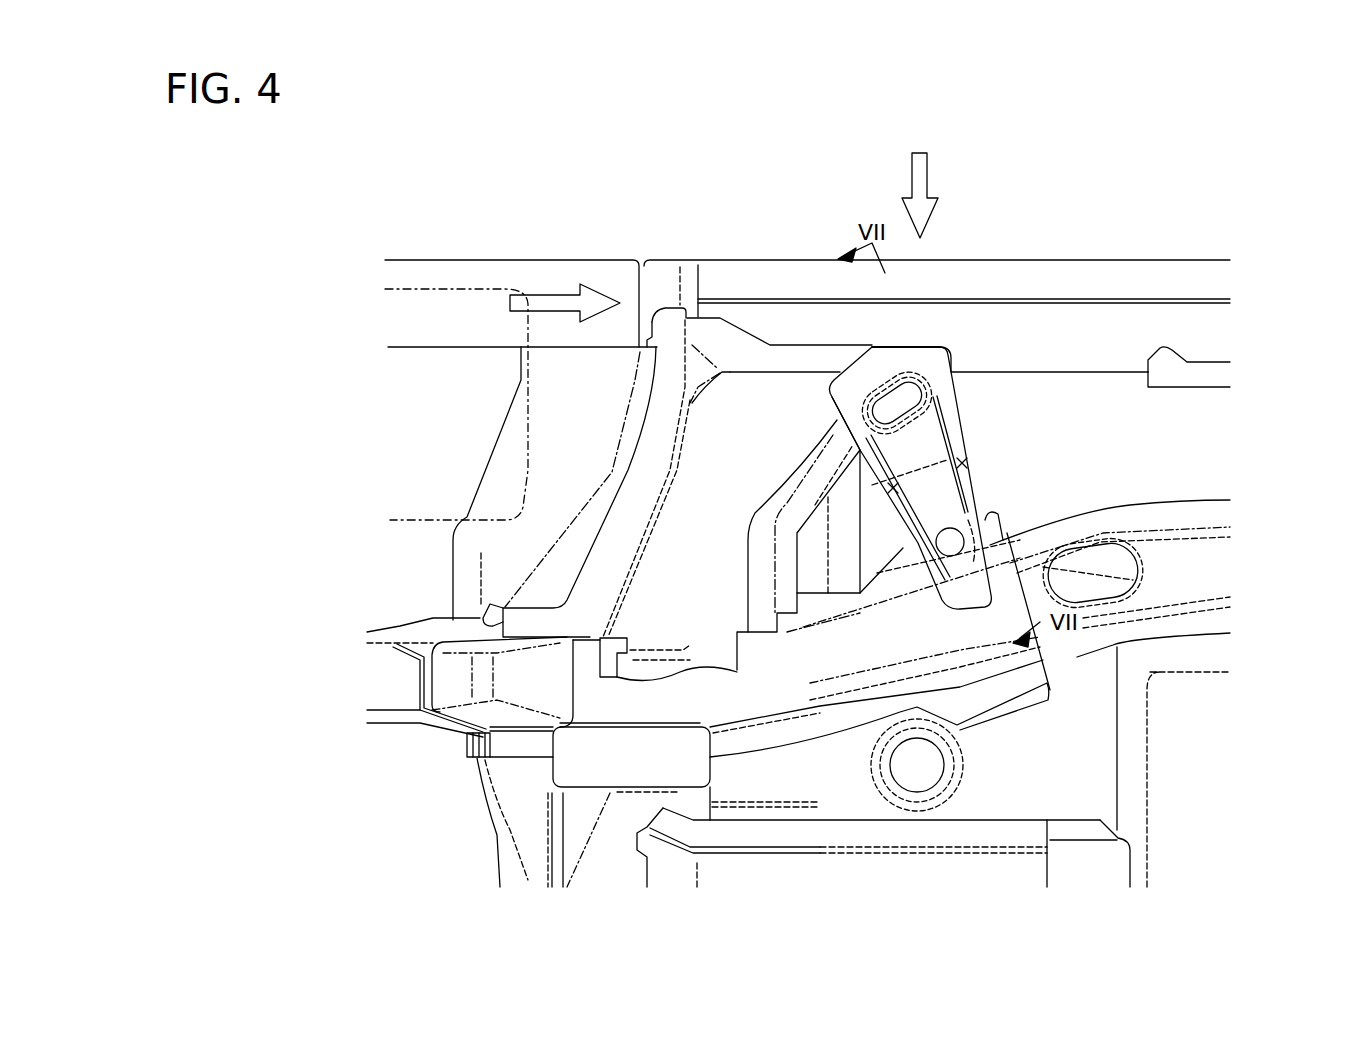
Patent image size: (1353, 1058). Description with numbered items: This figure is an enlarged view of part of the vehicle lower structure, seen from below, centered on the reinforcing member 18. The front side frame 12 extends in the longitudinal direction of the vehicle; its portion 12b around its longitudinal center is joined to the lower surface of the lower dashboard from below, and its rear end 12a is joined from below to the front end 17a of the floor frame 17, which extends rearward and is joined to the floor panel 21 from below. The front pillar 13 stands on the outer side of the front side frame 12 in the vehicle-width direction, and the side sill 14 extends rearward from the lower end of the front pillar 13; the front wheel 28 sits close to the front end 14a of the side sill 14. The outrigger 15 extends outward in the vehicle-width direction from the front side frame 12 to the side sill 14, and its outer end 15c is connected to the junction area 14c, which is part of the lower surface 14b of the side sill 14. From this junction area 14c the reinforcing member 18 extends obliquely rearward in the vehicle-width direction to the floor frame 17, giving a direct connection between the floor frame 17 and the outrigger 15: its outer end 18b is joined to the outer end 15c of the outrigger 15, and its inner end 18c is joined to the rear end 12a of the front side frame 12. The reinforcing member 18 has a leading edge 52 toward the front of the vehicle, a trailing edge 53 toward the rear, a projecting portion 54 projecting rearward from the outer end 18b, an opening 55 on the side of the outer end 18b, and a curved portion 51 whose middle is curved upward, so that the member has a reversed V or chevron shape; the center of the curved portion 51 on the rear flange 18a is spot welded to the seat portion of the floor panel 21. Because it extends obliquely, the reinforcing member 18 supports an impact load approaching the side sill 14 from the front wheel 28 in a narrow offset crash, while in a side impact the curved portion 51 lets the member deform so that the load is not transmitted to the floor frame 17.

The front side frame 12 is at (392, 698).
The rear end of the front side frame 12a is at (957, 622).
The portion of the front side frame 12b is at (608, 708).
The front pillar 13 is at (664, 272).
The side sill 14 is at (1092, 259).
The front end of the side sill 14a is at (722, 272).
The lower surface of the side sill 14b is at (1015, 343).
The junction area of the side sill 14c is at (888, 340).
The outrigger 15 is at (687, 495).
The outer end of the outrigger 15c is at (835, 358).
The floor frame 17 is at (1177, 514).
The front end of the floor frame 17a is at (1137, 580).
The reinforcing member 18 is at (977, 483).
The rear flange of the reinforcing member 18a is at (952, 420).
The outer end of the reinforcing member 18b is at (862, 380).
The inner end of the reinforcing member 18c is at (960, 593).
The floor panel 21 is at (1155, 440).
The front wheel 28 is at (430, 287).
The curved portion 51 is at (933, 460).
The leading edge 52 is at (856, 490).
The trailing edge 53 is at (967, 463).
The projecting portion 54 is at (942, 346).
The opening 55 is at (836, 423).